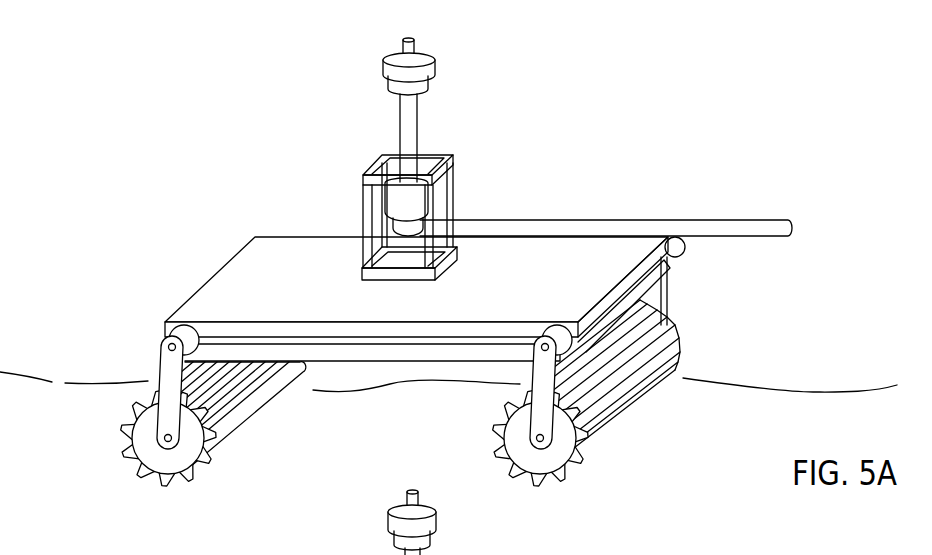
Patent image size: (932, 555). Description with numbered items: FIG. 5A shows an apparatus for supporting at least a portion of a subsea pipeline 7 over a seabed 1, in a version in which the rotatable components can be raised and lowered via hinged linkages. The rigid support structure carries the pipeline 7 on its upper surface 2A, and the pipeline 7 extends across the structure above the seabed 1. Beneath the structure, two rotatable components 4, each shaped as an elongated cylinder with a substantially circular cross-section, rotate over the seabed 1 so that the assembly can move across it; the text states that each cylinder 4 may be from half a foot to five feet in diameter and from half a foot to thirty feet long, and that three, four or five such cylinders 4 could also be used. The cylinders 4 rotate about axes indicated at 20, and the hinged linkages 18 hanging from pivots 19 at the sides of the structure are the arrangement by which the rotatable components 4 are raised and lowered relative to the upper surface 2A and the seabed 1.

The seabed 1 is at (818, 391).
The upper surface 2A is at (501, 289).
The rotatable component 4 is at (268, 395).
The subsea pipeline 7 is at (745, 224).
The swing arm 18 is at (176, 386).
The pivot 19 is at (168, 350).
The toothed wheel 20 is at (170, 443).